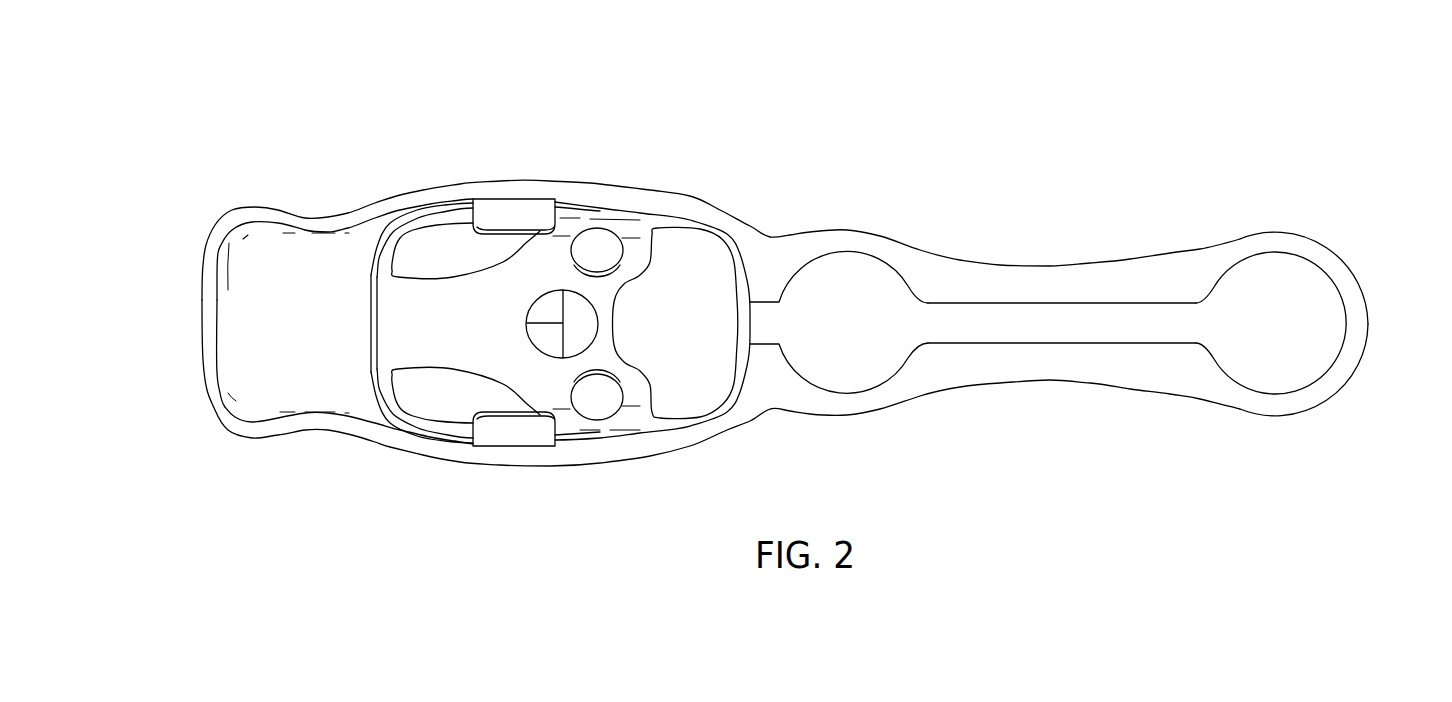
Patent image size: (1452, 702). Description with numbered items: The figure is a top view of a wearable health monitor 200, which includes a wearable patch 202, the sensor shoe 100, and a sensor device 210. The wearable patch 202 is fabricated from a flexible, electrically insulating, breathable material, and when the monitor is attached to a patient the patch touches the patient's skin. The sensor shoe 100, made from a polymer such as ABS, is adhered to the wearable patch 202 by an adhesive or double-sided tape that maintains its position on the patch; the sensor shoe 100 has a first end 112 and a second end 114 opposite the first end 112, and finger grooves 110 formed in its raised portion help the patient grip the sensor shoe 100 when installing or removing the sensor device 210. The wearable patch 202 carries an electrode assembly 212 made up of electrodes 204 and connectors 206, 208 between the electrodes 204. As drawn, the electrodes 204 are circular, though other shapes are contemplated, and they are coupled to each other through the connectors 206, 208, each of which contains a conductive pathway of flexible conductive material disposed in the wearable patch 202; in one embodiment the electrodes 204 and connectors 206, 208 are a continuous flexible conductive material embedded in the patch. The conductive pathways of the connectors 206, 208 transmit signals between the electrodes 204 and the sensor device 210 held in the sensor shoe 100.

The wearable health monitor 200 is at (240, 85).
The finger grooves 110 is at (304, 193).
The first end 112 is at (180, 277).
The sensor shoe 100 is at (258, 328).
The second end 114 is at (773, 261).
The electrodes 204 is at (862, 335).
The connector 206 is at (1081, 335).
The wearable patch 202 is at (1357, 325).
The electrode assembly 212 is at (1337, 257).
The connector 208 is at (762, 327).
The sensor device 210 is at (637, 396).